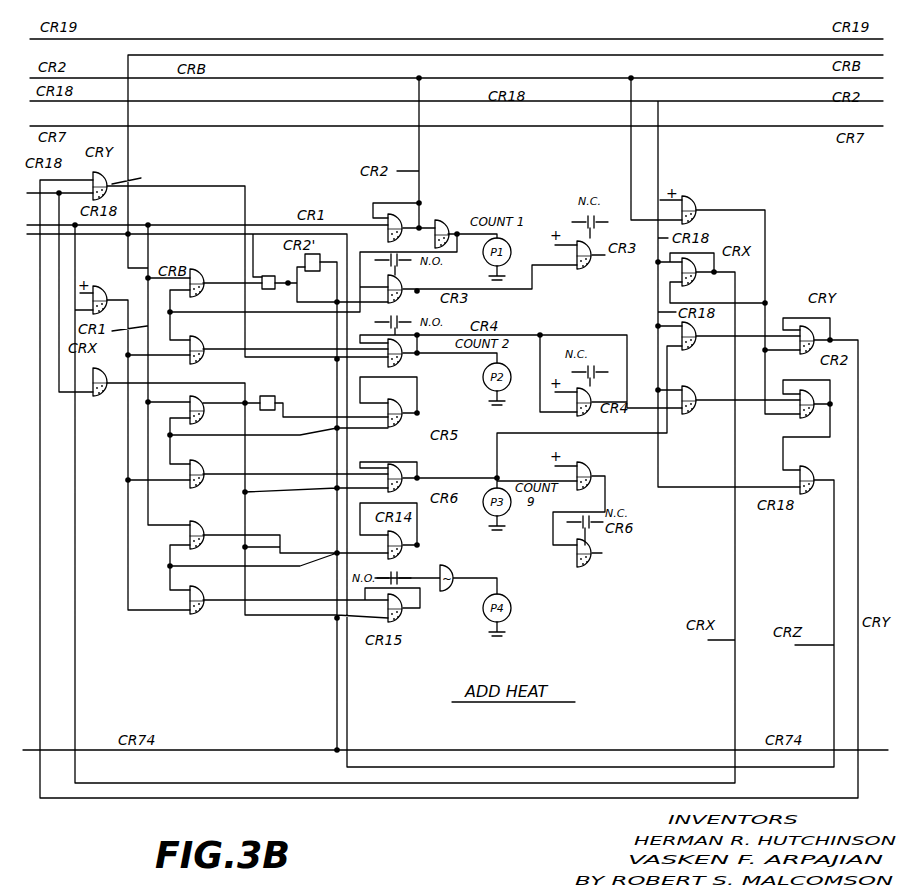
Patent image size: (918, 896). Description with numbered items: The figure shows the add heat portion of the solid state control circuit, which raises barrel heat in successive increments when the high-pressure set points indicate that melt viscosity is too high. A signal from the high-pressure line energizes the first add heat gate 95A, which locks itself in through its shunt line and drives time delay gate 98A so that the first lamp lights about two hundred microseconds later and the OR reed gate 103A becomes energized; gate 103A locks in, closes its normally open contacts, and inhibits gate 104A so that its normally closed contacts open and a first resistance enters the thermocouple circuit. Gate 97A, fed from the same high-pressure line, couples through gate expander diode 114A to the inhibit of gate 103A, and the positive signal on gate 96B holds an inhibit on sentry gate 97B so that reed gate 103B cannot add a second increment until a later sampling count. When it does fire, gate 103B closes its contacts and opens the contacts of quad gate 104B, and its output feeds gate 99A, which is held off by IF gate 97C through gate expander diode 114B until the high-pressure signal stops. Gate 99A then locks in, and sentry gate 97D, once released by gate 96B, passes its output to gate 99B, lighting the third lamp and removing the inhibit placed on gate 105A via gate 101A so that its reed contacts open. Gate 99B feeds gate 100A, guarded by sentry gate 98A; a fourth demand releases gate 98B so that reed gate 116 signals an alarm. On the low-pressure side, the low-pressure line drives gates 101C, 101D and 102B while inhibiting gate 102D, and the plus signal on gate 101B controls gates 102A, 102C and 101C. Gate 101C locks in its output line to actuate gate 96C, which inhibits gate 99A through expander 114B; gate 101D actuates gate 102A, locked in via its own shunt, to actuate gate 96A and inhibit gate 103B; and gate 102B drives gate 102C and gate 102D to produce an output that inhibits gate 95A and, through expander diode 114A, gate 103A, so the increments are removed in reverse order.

The first add heat gate 95A is at (385, 216).
The gate 96A is at (134, 183).
The gate 96B is at (119, 273).
The gate 96C is at (115, 400).
The gate 97A is at (215, 274).
The gate 97B is at (214, 341).
The IF gate 97C is at (214, 401).
The sentry gate 97D is at (215, 465).
The time delay gate 98A is at (460, 208).
The gate 98B is at (211, 590).
The gate 99A is at (405, 408).
The gate 99B is at (405, 472).
The gate 100A is at (405, 550).
The gate 101A is at (588, 468).
The gate 101B is at (696, 200).
The gate 101C is at (690, 285).
The gate 101D is at (690, 349).
The gate 102A is at (810, 354).
The gate 102B is at (688, 413).
The gate 102C is at (808, 418).
The gate 102D is at (822, 462).
The OR reed gate 103A is at (405, 285).
The reed gate 103B is at (405, 360).
The gate 104A is at (588, 270).
The quad gate 104B is at (580, 418).
The gate 105A is at (592, 563).
The gate expander diode 114A is at (272, 272).
The gate expander diode 114B is at (275, 398).
The reed gate 116 is at (403, 616).